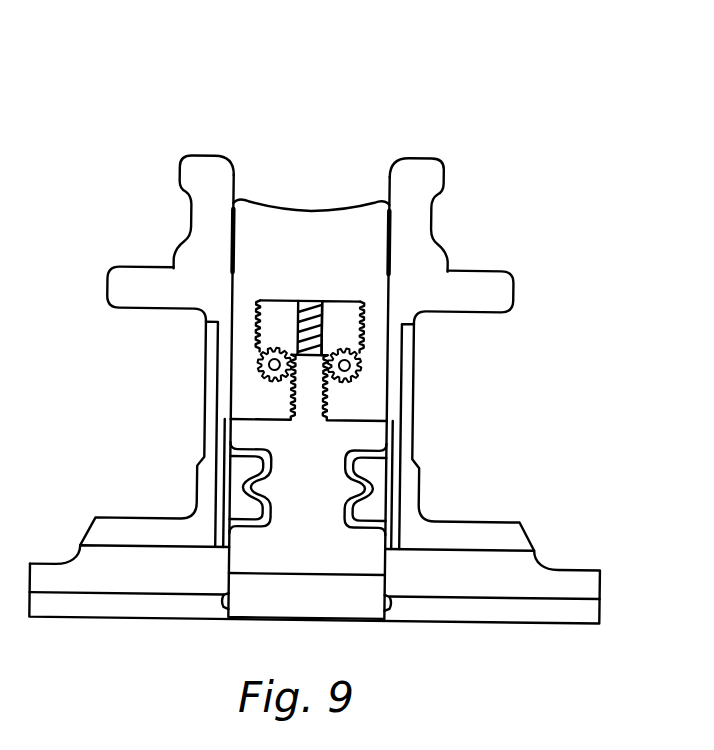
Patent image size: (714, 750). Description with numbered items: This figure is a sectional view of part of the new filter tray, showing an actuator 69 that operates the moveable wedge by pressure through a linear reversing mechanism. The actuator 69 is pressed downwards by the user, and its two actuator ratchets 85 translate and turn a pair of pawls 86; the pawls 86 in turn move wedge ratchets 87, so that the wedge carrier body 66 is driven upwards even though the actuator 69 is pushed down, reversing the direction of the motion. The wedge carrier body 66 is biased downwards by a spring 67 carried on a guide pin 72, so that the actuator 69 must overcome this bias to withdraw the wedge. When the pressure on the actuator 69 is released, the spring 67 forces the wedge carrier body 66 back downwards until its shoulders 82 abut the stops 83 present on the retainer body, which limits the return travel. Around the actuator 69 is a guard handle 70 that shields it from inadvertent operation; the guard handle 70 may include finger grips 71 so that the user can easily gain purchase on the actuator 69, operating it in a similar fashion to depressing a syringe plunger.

The wedge carrier body 66 is at (262, 547).
The spring 67 is at (302, 312).
The actuator 69 is at (308, 227).
The guard handle 70 is at (425, 178).
The finger grips 71 is at (137, 282).
The guide pin 72 is at (318, 306).
The shoulders 82 is at (372, 445).
The stops 83 is at (370, 492).
The actuator ratchets 85 is at (258, 324).
The pawls 86 is at (266, 368).
The wedge ratchets 87 is at (287, 405).